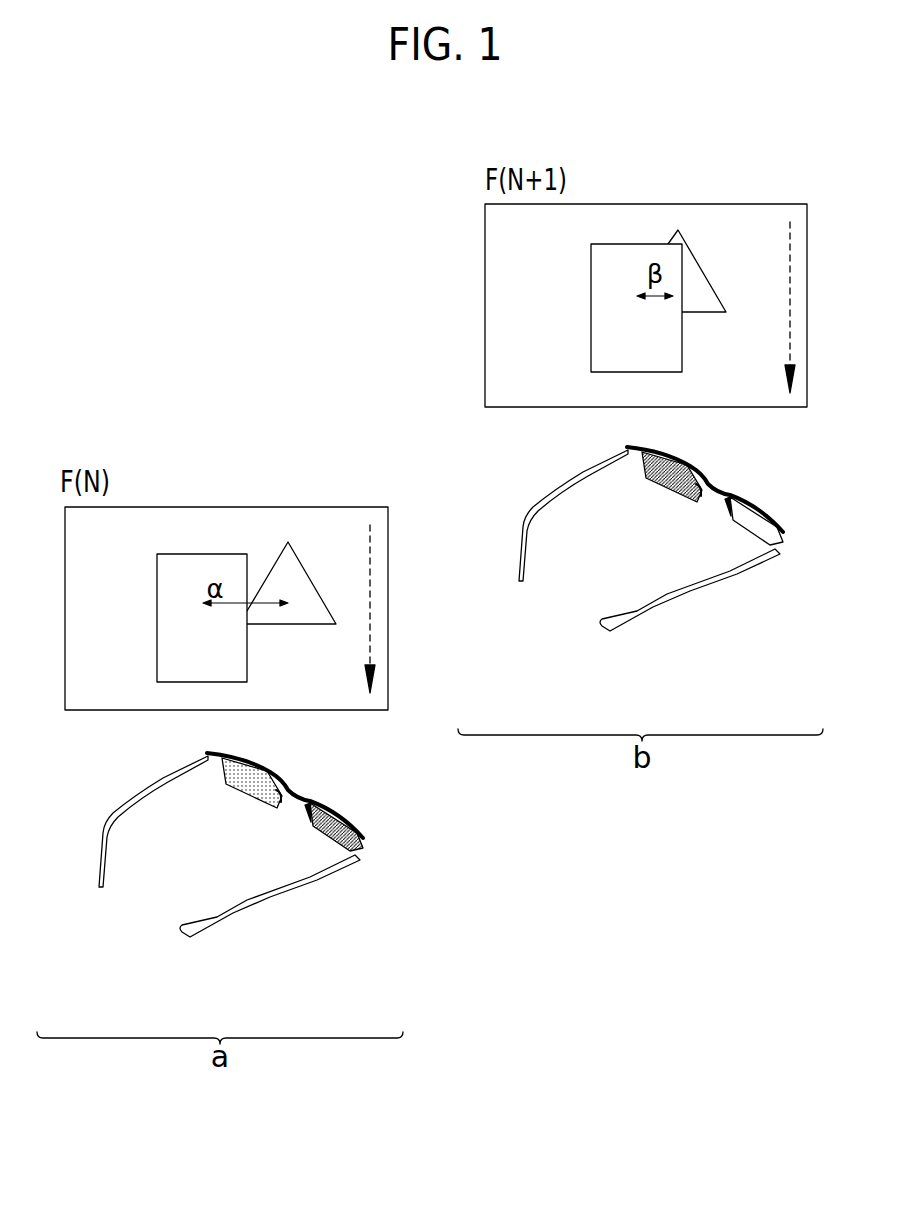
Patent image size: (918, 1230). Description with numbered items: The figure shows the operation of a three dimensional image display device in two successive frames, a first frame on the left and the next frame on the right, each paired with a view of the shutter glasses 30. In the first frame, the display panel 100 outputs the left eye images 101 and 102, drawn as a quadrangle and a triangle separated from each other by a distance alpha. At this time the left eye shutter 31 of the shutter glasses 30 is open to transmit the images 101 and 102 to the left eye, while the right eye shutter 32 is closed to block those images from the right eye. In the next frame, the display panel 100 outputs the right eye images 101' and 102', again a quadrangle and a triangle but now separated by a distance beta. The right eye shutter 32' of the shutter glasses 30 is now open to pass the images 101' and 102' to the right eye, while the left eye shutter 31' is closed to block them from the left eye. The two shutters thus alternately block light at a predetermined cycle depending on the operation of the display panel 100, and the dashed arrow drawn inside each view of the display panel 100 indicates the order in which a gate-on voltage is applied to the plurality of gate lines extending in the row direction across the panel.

The display panel 100 is at (347, 523).
The left eye image 101 is at (202, 560).
The left eye image 102 is at (291, 527).
The right eye image 101' is at (636, 254).
The right eye image 102' is at (706, 224).
The shutter glasses 30 is at (222, 920).
The left eye shutter (open) 31 is at (233, 808).
The right eye shutter (closed) 32 is at (341, 876).
The left eye shutter (closed) 31' is at (647, 506).
The right eye shutter (open) 32' is at (763, 575).